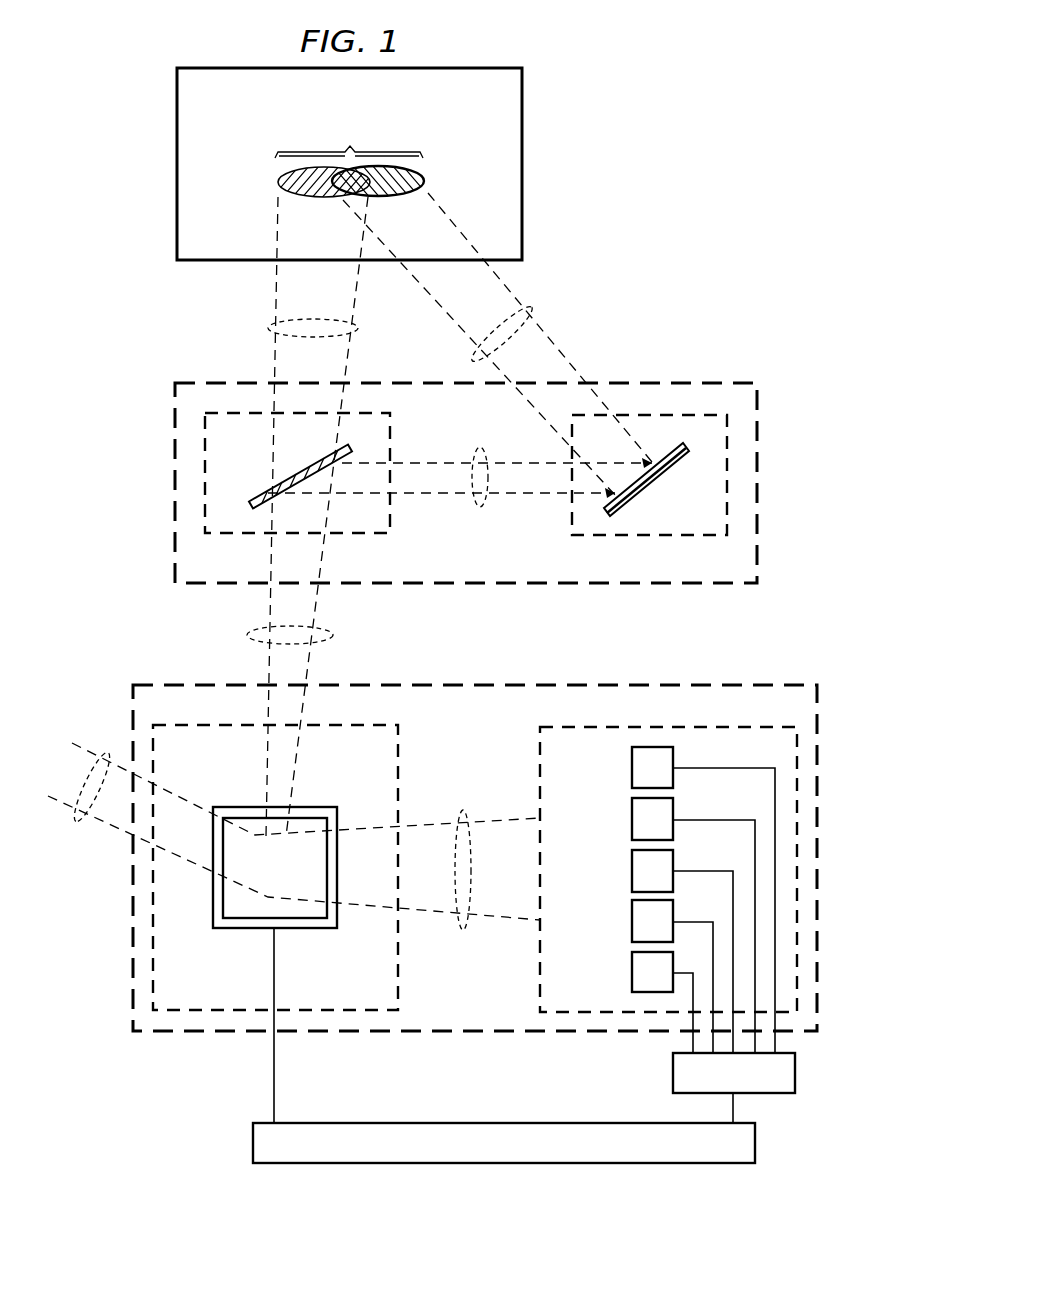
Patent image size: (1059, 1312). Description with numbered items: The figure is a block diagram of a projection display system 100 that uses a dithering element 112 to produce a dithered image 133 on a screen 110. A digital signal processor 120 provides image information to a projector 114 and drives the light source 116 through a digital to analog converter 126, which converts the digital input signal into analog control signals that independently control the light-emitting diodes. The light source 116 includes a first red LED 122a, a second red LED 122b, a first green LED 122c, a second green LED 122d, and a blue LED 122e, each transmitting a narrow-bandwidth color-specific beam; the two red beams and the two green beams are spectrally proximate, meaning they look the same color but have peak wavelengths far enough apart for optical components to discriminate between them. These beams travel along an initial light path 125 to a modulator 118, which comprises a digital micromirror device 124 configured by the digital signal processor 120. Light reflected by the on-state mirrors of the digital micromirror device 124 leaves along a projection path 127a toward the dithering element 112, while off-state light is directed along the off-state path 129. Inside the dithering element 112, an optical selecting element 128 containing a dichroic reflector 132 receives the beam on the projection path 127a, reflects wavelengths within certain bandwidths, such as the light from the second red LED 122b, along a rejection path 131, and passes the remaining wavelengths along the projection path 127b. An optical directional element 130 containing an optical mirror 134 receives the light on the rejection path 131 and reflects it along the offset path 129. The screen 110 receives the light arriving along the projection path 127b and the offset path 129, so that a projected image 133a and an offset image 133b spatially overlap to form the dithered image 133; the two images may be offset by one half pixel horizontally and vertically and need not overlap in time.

The projection display system 100 is at (663, 155).
The screen 110 is at (174, 141).
The dithering element 112 is at (172, 430).
The projector 114 is at (187, 1042).
The light source 116 is at (526, 985).
The modulator 118 is at (412, 945).
The digital signal processor 120 is at (253, 1140).
The red LED 122a is at (632, 760).
The red LED 122b is at (632, 811).
The green LED 122c is at (632, 862).
The green LED 122d is at (632, 912).
The blue LED 122e is at (632, 964).
The digital micromirror device 124 is at (243, 930).
The initial light path 125 is at (462, 810).
The digital to analog converter 126 is at (673, 1073).
The projection path 127a is at (248, 634).
The projection path 127b is at (268, 327).
The optical selecting element 128 is at (404, 513).
The offset path 129 is at (530, 312).
The optical directional element 130 is at (558, 513).
The rejection path 131 is at (479, 447).
The dichroic reflector 132 is at (258, 492).
The dithered image 133 is at (349, 139).
The projected image 133a is at (278, 182).
The offset image 133b is at (426, 178).
The optical mirror 134 is at (654, 482).